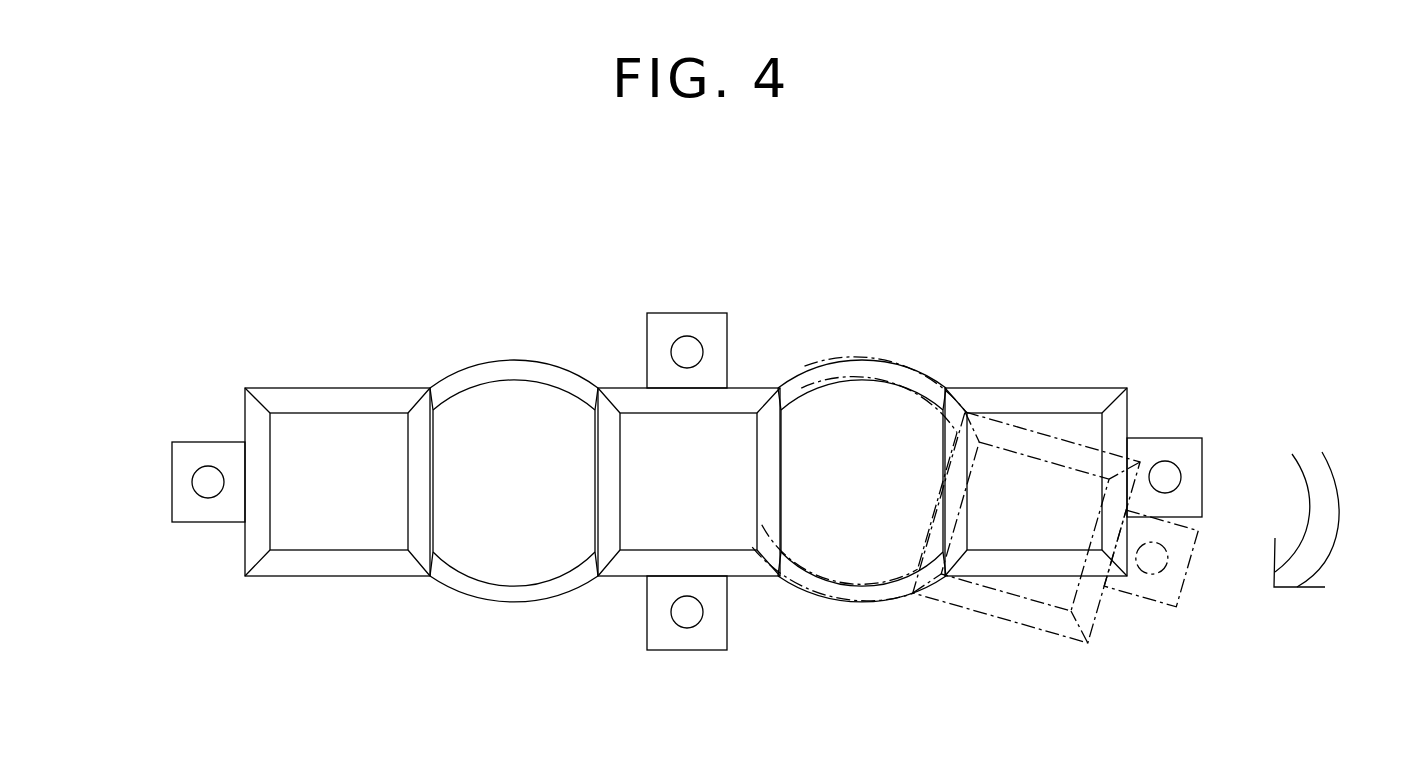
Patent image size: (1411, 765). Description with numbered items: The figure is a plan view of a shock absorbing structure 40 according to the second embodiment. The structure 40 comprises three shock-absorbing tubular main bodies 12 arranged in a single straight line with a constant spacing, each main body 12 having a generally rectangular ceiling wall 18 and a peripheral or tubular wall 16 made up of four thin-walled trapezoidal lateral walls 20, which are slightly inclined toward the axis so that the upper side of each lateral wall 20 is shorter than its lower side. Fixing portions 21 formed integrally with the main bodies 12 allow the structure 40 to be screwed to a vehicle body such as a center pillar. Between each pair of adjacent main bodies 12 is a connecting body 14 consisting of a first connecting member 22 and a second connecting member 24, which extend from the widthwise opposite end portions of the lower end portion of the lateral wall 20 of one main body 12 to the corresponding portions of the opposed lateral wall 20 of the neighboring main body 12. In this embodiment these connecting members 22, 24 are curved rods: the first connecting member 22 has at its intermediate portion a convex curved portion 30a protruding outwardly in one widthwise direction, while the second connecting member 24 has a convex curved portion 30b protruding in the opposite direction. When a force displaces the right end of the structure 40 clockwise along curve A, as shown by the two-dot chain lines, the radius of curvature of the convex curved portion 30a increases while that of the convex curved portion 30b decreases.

The shock-absorbing tubular main body 12 is at (252, 603).
The connecting body 14 is at (545, 608).
The peripheral or tubular wall 16 is at (763, 384).
The ceiling wall 18 is at (298, 425).
The lateral wall 20 is at (312, 395).
The fixing portion 21 is at (185, 450).
The first connecting member 22 is at (470, 382).
The second connecting member 24 is at (478, 583).
The convex curved portion 30a is at (515, 368).
The convex curved portion 30b is at (518, 595).
The shock absorbing structure 40 is at (222, 347).
The curve A is at (1333, 519).